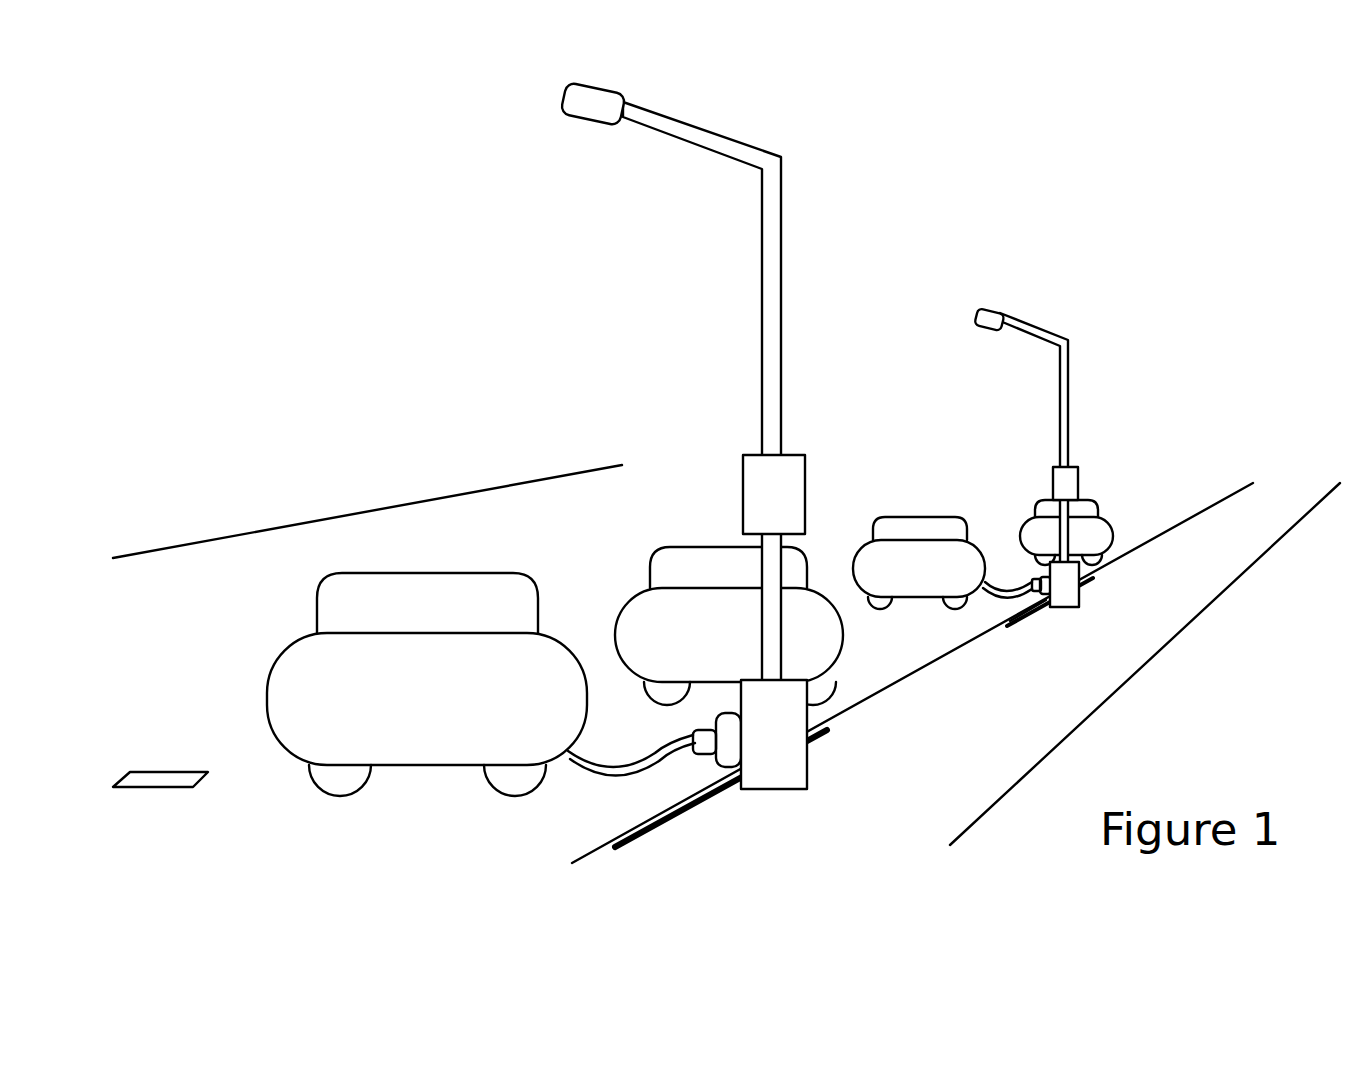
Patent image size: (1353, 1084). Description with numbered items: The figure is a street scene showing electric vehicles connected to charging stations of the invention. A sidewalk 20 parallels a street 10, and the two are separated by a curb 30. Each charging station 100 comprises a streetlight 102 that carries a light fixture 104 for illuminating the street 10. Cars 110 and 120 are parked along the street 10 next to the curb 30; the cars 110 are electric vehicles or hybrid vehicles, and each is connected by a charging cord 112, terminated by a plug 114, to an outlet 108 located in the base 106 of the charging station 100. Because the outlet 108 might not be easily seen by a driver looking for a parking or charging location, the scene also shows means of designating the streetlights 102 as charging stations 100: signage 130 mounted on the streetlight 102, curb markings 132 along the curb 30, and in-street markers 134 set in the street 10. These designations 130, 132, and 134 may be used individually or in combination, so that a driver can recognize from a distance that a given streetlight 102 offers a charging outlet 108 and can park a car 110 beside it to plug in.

The street 10 is at (532, 541).
The sidewalk 20 is at (979, 764).
The curb 30 is at (882, 690).
The charging station 100 is at (812, 818).
The streetlight 102 is at (762, 288).
The light fixture 104 is at (562, 112).
The base 106 is at (807, 768).
The outlet 108 is at (716, 730).
The car 110 is at (365, 574).
The charging cord 112 is at (593, 772).
The plug 114 is at (700, 756).
The car 120 is at (690, 548).
The signage 130 is at (743, 504).
The curb marking 132 is at (693, 806).
The in-street marker 134 is at (145, 771).